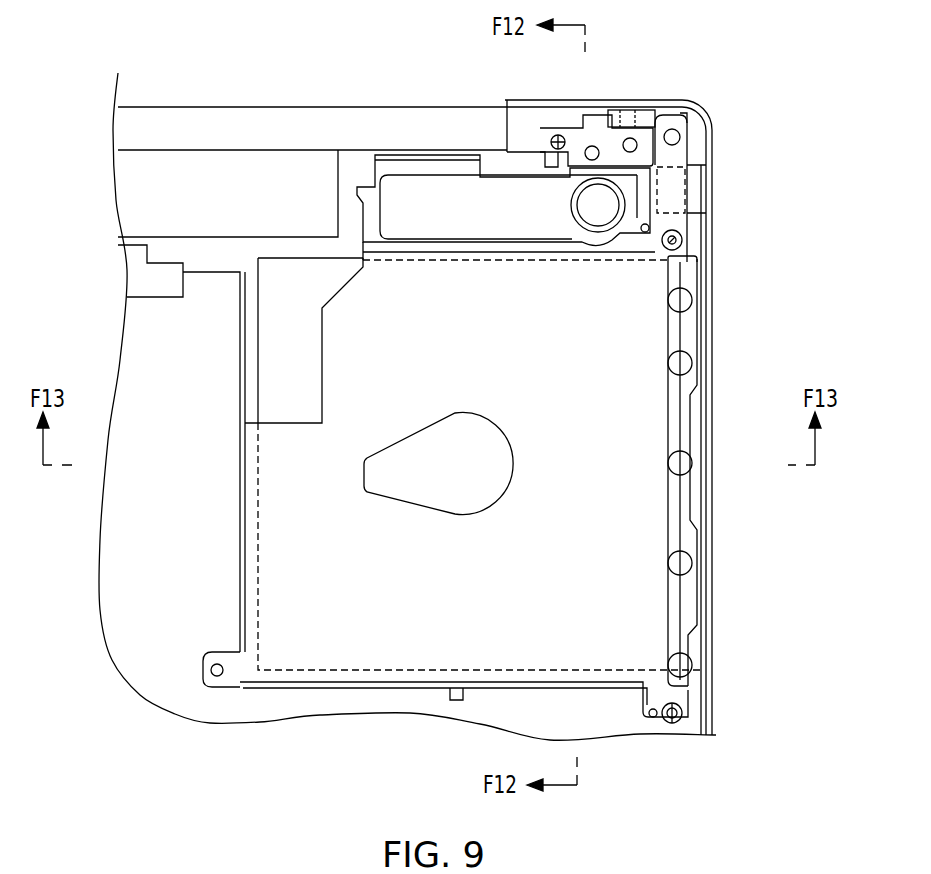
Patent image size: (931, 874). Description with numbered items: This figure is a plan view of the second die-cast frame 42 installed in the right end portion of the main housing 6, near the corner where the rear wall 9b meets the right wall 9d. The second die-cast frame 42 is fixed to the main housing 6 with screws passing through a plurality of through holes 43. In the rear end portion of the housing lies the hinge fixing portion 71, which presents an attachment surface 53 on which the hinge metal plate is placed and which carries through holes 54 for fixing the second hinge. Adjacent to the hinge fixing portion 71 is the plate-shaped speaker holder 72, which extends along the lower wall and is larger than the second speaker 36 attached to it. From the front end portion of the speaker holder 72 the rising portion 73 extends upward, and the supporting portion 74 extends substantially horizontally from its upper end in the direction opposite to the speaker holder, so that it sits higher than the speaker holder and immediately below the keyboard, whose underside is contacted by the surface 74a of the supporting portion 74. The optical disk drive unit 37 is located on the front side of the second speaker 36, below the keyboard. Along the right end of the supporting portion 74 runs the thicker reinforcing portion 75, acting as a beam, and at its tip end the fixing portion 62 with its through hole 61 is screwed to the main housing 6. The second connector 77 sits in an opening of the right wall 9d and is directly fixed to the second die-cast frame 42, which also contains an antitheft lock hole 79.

The main housing 6 is at (730, 105).
The rear wall 9b is at (523, 99).
The right wall 9d is at (708, 418).
The second speaker 36 is at (413, 187).
The optical disk drive unit 37 is at (268, 363).
The second die-cast frame 42 is at (346, 658).
The through holes 43 is at (680, 237).
The attachment surface 53 is at (602, 162).
The through holes 54 is at (590, 146).
The through hole 61 is at (212, 676).
The fixing portion 62 is at (203, 667).
The hinge fixing portion 71 is at (613, 136).
The speaker holder 72 is at (367, 235).
The rising portion 73 is at (468, 252).
The supporting portion 74 is at (657, 357).
The surface 74a is at (644, 526).
The reinforcing portion 75 is at (692, 513).
The second connector 77 is at (700, 163).
The antitheft lock hole 79 is at (650, 103).